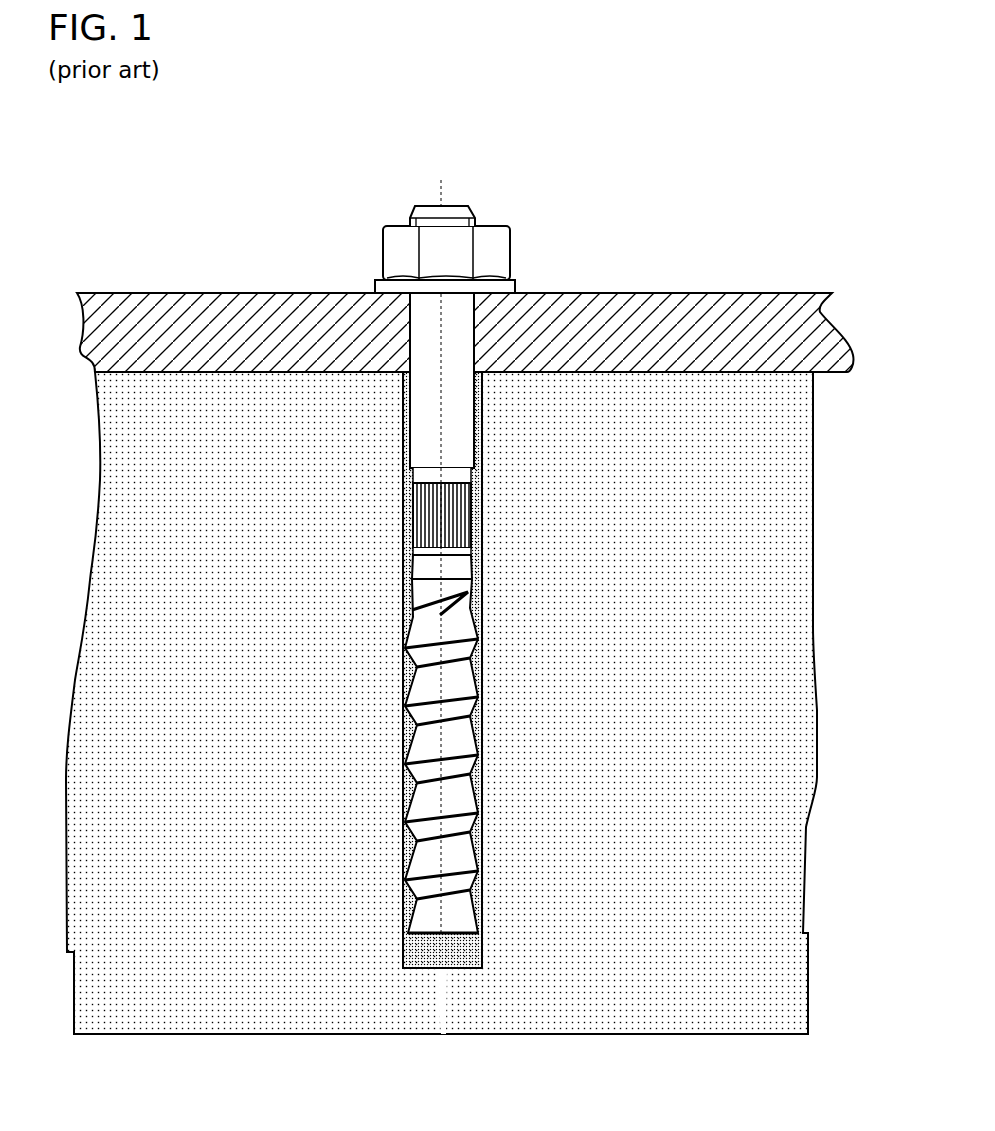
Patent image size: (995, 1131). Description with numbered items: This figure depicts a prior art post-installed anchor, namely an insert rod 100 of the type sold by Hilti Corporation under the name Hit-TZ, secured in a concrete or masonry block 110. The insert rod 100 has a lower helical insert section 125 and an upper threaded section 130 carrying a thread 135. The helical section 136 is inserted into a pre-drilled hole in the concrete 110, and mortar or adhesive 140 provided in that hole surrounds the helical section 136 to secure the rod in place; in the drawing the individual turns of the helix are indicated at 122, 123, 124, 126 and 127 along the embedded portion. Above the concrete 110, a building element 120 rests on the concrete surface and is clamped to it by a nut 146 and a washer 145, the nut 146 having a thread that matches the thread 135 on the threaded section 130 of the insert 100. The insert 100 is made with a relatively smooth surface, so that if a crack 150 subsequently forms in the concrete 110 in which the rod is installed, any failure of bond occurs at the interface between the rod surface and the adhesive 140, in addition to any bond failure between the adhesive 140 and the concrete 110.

The insert rod 100 is at (437, 172).
The concrete or masonry block 110 is at (807, 563).
The building element 120 is at (622, 302).
The thread flight 122 is at (408, 930).
The thread flight 123 is at (408, 880).
The thread flight 124 is at (408, 822).
The helical insert section 125 is at (408, 764).
The thread flight 126 is at (408, 706).
The thread flight 127 is at (408, 648).
The threaded section 130 is at (462, 417).
The thread 135 is at (420, 208).
The helical section 136 is at (487, 728).
The mortar or adhesive 140 is at (472, 963).
The washer 145 is at (512, 288).
The nut 146 is at (502, 253).
The crack 150 is at (442, 1045).